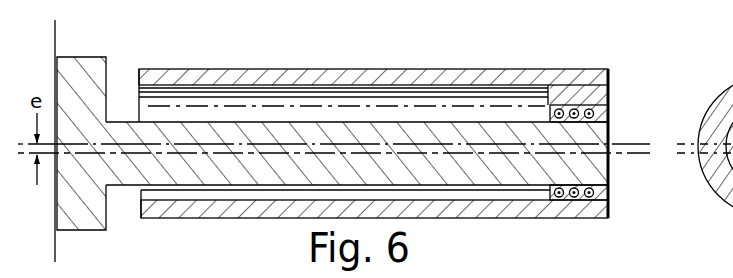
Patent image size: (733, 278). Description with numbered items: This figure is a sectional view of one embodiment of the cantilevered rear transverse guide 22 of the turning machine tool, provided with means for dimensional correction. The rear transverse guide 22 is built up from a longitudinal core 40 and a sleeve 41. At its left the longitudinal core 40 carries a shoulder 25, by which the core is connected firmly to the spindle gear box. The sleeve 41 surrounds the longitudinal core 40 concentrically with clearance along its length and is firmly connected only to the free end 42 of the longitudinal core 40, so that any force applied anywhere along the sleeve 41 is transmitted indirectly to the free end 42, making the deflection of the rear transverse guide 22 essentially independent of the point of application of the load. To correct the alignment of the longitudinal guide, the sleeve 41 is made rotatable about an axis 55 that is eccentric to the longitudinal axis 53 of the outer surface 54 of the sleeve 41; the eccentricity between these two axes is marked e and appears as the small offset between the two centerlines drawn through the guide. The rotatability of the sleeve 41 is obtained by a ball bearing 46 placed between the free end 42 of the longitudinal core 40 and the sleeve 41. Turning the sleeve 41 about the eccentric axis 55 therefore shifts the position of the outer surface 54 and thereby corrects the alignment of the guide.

The rear transverse guide 22 is at (515, 222).
The shoulder 25 is at (82, 66).
The longitudinal core 40 is at (400, 135).
The sleeve 41 is at (340, 85).
The free end 42 is at (597, 135).
The ball bearing 46 is at (603, 195).
The longitudinal axis 53 is at (637, 158).
The outer surface 54 is at (220, 69).
The axis 55 is at (631, 139).